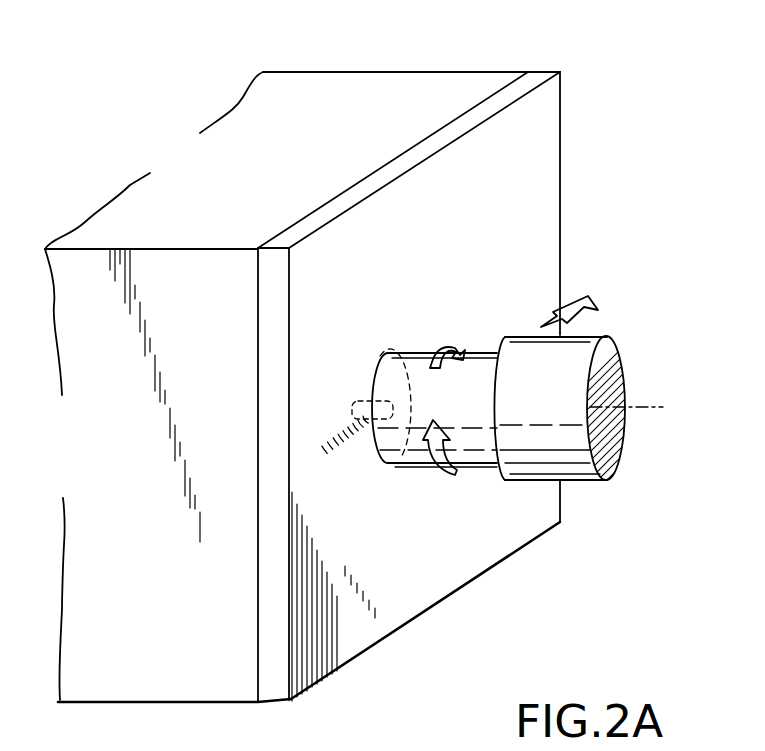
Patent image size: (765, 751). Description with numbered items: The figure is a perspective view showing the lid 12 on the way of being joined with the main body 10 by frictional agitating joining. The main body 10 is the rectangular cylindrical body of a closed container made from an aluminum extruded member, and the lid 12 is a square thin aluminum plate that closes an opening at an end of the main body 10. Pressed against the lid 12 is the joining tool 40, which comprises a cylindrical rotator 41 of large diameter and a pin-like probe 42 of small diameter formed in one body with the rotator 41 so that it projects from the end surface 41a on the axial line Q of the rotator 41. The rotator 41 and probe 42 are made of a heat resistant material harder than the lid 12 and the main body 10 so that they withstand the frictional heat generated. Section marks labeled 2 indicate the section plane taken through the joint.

The main body 10 is at (305, 98).
The lid 12 is at (535, 197).
The joining tool 40 is at (613, 493).
The rotator 41 is at (476, 372).
The end surface 41a is at (375, 357).
The probe 42 is at (350, 403).
The section line 2- 2 is at (390, 173).
The axial line Q is at (660, 410).